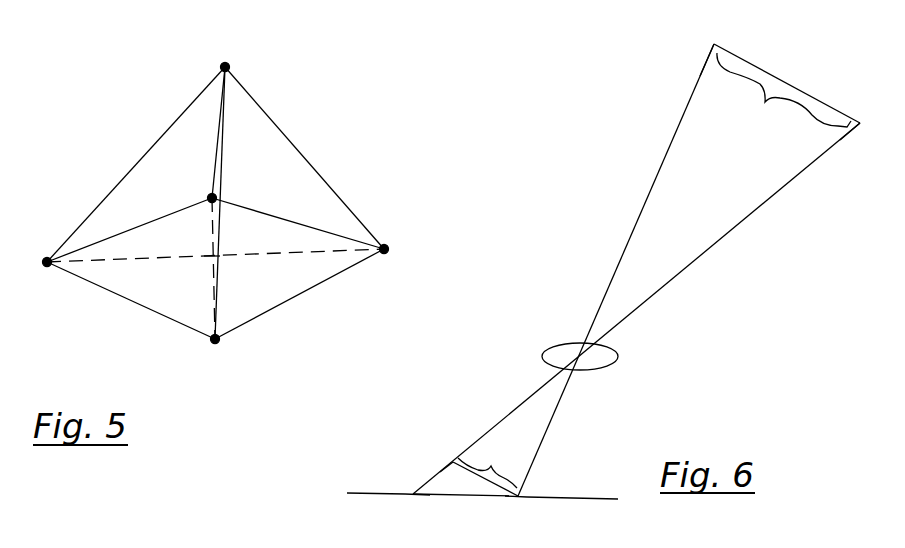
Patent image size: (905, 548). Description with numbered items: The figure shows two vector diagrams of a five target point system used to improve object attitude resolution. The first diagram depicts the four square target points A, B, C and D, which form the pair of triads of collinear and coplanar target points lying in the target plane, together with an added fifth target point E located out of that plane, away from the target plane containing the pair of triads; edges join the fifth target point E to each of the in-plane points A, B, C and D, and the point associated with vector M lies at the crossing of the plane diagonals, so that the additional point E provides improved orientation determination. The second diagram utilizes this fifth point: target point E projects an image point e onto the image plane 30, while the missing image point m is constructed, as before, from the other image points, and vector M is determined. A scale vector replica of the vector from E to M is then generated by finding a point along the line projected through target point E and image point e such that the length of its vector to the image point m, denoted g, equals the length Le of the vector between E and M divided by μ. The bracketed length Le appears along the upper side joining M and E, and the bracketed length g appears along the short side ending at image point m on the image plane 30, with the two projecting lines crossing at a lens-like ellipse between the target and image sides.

In FIG. 5, the fifth target point E is at (231, 54).
In FIG. 6, the fifth target point E is at (859, 128).
In FIG. 5, the target point A is at (201, 188).
In FIG. 5, the target point B is at (224, 350).
In FIG. 5, the target point C is at (393, 248).
In FIG. 5, the target point D is at (36, 266).
In FIG. 5, the vector M is at (189, 277).
In FIG. 6, the vector M is at (713, 46).
In FIG. 6, the length of E−M Le is at (784, 95).
In FIG. 6, the length of vector e*−m g is at (487, 465).
In FIG. 6, the image point e is at (415, 510).
In FIG. 6, the missing image point m is at (523, 511).
In FIG. 6, the image plane 30 is at (463, 511).